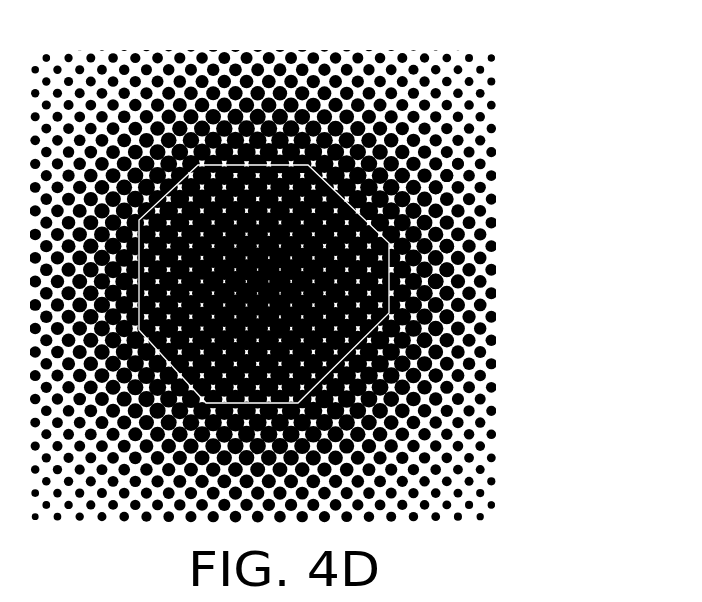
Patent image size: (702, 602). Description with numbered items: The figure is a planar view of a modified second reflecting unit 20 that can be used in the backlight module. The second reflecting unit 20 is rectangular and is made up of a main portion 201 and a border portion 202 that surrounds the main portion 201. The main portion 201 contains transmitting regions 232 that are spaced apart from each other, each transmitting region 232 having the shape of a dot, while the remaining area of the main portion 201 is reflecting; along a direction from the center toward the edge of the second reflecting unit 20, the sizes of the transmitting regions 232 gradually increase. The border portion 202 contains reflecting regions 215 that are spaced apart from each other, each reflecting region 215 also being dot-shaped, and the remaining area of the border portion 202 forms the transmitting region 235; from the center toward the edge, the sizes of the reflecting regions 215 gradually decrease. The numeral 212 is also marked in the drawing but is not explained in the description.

The second reflecting unit 20 is at (190, 27).
The transmitting region 235 is at (450, 155).
The reflecting regions 215 is at (433, 174).
The first light-shielding dot 212 is at (435, 238).
The transmitting regions 232 is at (435, 268).
The border portion 202 is at (440, 305).
The main portion 201 is at (432, 367).